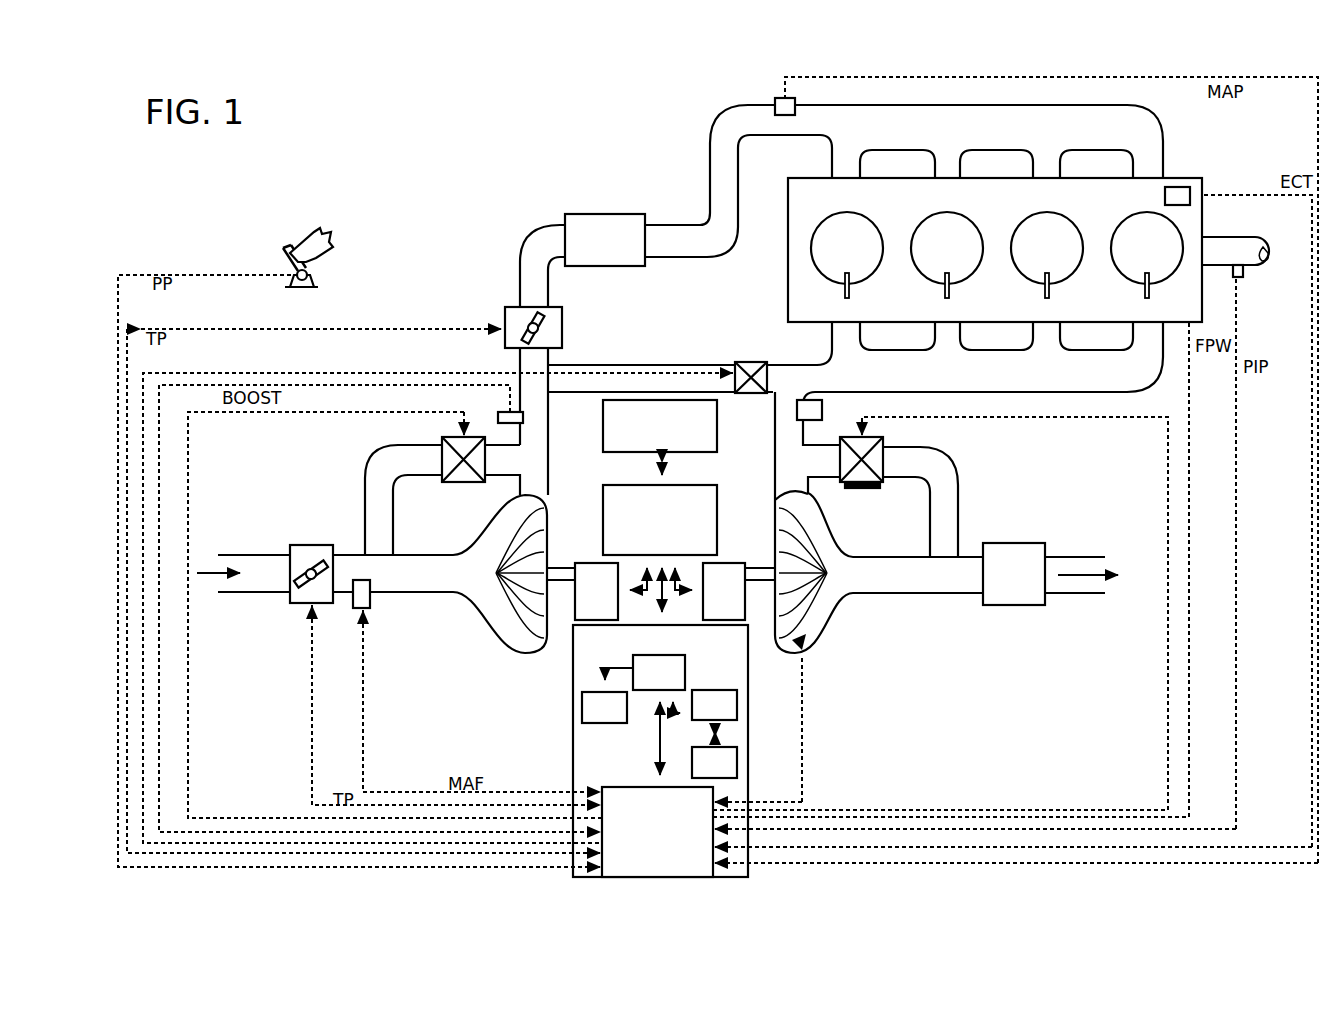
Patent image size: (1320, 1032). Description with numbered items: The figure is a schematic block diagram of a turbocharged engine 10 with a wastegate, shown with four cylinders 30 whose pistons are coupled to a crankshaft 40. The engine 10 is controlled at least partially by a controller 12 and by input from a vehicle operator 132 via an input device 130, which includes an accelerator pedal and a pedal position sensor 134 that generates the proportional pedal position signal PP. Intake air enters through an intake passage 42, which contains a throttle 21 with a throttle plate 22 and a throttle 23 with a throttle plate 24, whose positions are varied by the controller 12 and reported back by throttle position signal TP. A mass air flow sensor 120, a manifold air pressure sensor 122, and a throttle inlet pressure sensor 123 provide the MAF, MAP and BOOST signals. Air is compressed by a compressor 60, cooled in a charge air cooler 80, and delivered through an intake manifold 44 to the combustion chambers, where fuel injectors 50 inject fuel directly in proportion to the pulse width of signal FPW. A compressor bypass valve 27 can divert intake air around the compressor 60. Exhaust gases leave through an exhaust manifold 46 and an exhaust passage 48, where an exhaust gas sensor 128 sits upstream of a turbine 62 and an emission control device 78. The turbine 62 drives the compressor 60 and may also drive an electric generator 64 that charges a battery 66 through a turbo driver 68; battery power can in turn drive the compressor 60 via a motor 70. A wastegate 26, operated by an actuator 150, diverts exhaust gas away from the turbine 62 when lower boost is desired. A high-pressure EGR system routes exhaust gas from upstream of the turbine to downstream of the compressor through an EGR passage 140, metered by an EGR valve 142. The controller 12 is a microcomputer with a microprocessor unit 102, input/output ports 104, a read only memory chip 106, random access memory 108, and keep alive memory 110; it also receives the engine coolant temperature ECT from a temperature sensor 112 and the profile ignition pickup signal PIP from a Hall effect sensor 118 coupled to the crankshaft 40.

The engine 10 is at (1098, 206).
The controller 12 is at (619, 764).
The throttle 21 is at (297, 545).
The throttle plate 22 is at (314, 560).
The throttle 23 is at (514, 307).
The throttle plate 24 is at (548, 330).
The wastegate 26 is at (883, 449).
The compressor bypass valve 27 is at (442, 452).
The cylinder 30 is at (1157, 257).
The crankshaft 40 is at (1240, 237).
The intake passage 42 is at (280, 584).
The intake manifold 44 is at (880, 140).
The exhaust manifold 46 is at (856, 384).
The exhaust passage 48 is at (927, 584).
The fuel injector 50 is at (1145, 295).
The compressor 60 is at (508, 610).
The turbine 62 is at (815, 533).
The electric generator 64 is at (734, 597).
The battery 66 is at (603, 434).
The turbo driver 68 is at (690, 485).
The motor 70 is at (606, 597).
The emission control device 78 is at (1024, 584).
The charge air cooler 80 is at (576, 214).
The microprocessor unit 102 is at (628, 664).
The input/output ports 104 is at (703, 868).
The read only memory chip 106 is at (582, 716).
The random access memory 108 is at (700, 690).
The keep alive memory 110 is at (692, 756).
The temperature sensor 112 is at (1180, 187).
The Hall effect sensor 118 is at (1243, 278).
The mass air flow sensor 120 is at (370, 596).
The manifold air pressure sensor 122 is at (778, 100).
The throttle inlet pressure sensor 123 is at (498, 415).
The exhaust gas sensor 128 is at (822, 406).
The input device 130 is at (283, 254).
The vehicle operator 132 is at (323, 243).
The pedal position sensor 134 is at (312, 280).
The EGR passage 140 is at (640, 365).
The EGR valve 142 is at (756, 362).
The actuator 150 is at (870, 488).